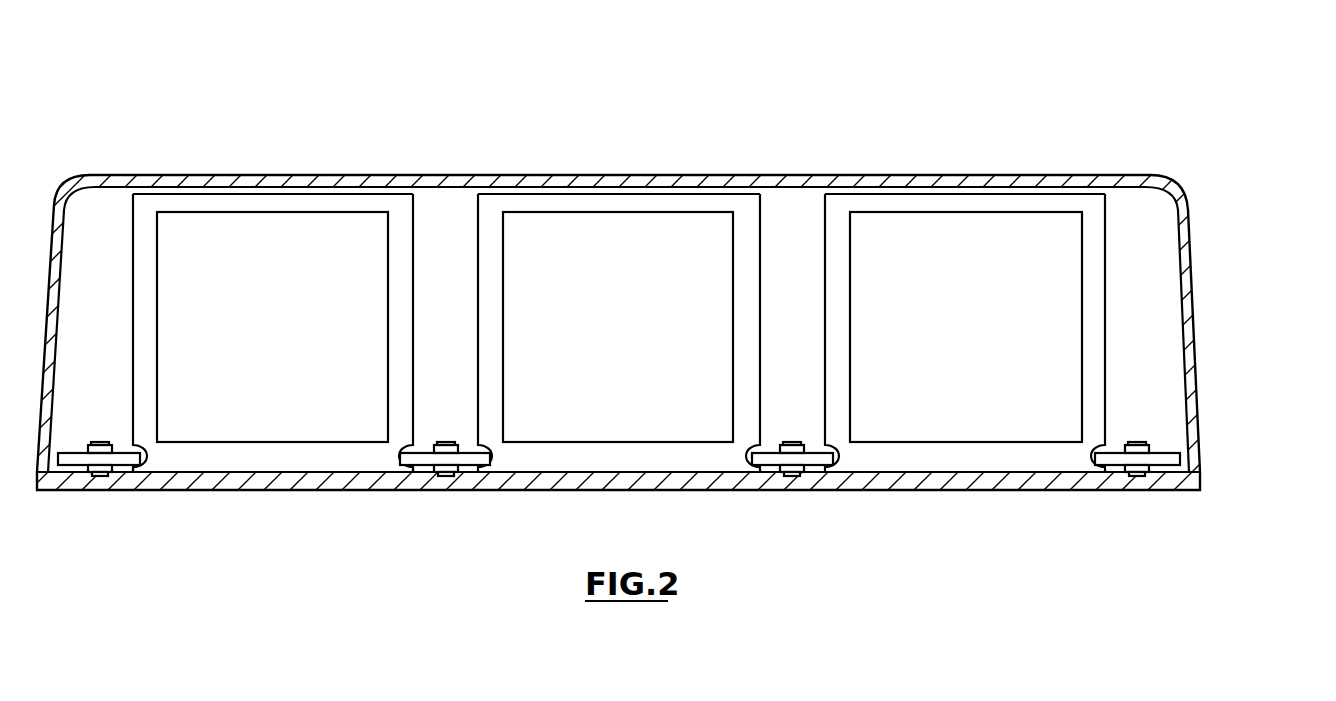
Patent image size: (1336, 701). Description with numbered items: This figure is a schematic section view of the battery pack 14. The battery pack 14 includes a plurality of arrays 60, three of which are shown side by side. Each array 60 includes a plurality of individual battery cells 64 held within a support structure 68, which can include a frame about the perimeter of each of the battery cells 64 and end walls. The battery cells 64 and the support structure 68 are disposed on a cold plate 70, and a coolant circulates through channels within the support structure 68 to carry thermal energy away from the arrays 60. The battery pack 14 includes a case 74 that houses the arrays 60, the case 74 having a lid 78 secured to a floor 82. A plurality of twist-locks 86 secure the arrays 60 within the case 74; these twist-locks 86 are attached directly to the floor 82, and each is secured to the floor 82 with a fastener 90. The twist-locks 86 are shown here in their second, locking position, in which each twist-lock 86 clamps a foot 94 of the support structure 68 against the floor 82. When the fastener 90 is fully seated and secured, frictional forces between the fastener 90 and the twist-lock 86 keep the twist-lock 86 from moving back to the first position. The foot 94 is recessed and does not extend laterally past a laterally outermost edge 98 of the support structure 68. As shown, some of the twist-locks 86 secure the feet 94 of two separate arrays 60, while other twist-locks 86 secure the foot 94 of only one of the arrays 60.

The battery pack 14 is at (1170, 97).
The array 60 is at (284, 334).
The battery cell 64 is at (182, 355).
The support structure 68 is at (320, 452).
The cold plate 70 is at (225, 466).
The case 74 is at (1238, 302).
The lid 78 is at (1200, 430).
The floor 82 is at (1140, 478).
The twist-lock 86 is at (473, 466).
The fastener 90 is at (444, 442).
The foot 94 is at (410, 468).
The laterally outermost edge 98 is at (414, 305).